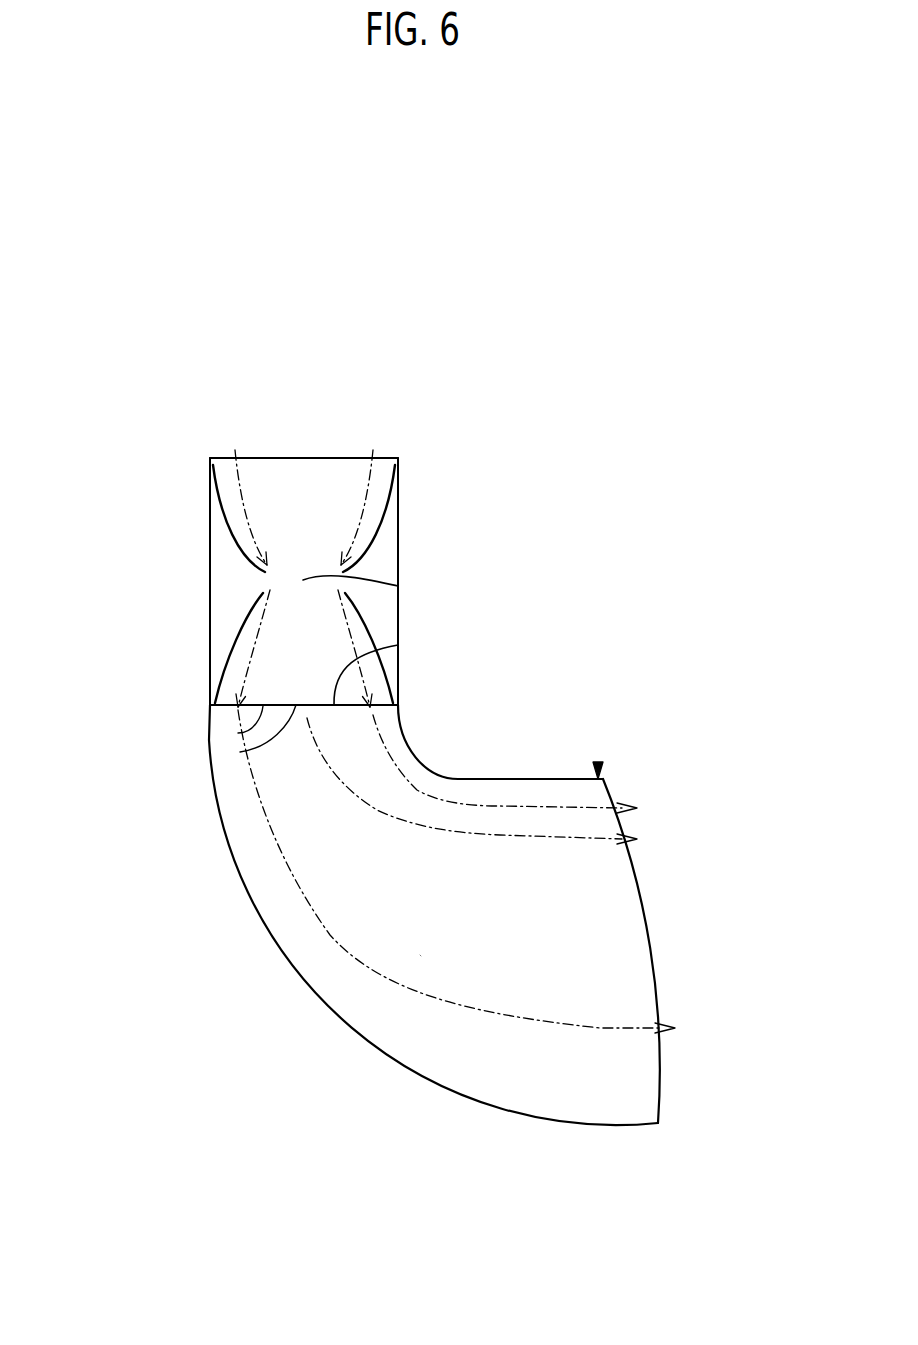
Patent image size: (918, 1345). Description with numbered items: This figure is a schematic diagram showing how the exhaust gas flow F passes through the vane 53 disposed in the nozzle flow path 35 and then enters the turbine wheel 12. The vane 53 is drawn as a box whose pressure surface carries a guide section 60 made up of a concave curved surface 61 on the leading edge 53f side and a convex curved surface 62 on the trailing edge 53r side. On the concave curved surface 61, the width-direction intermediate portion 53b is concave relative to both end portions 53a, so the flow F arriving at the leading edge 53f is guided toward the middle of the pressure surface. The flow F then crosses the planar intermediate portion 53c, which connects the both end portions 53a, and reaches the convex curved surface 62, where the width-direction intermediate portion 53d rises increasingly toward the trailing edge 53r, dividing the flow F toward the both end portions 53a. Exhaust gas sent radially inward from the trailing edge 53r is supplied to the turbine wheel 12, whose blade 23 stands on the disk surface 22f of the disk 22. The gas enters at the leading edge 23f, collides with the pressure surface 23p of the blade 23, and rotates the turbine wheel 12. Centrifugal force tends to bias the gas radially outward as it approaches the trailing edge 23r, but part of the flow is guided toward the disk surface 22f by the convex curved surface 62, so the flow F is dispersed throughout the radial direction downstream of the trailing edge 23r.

The turbine wheel 12 is at (598, 772).
The disk 22 is at (433, 957).
The disk surface 22f is at (458, 1093).
The blade 23 is at (545, 778).
The leading edge 23f is at (398, 645).
The trailing edge 23r is at (650, 948).
The pressure surface 23p is at (420, 955).
The nozzle flow path 35 is at (352, 475).
The vane 53 is at (210, 585).
The both end portions 53a is at (210, 482).
The width-direction intermediate portion 53b is at (318, 473).
The intermediate portion 53c is at (398, 586).
The width-direction intermediate portion 53d is at (240, 752).
The leading edge 53f is at (270, 458).
The trailing edge 53r is at (238, 733).
The guide section 60 is at (164, 584).
The concave curved surface 61 is at (228, 507).
The convex curved surface 62 is at (225, 660).
The exhaust gas flow F is at (232, 520).